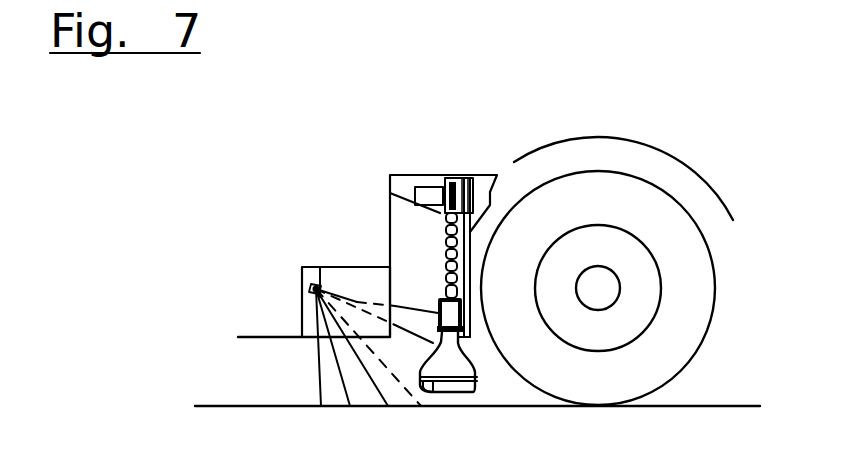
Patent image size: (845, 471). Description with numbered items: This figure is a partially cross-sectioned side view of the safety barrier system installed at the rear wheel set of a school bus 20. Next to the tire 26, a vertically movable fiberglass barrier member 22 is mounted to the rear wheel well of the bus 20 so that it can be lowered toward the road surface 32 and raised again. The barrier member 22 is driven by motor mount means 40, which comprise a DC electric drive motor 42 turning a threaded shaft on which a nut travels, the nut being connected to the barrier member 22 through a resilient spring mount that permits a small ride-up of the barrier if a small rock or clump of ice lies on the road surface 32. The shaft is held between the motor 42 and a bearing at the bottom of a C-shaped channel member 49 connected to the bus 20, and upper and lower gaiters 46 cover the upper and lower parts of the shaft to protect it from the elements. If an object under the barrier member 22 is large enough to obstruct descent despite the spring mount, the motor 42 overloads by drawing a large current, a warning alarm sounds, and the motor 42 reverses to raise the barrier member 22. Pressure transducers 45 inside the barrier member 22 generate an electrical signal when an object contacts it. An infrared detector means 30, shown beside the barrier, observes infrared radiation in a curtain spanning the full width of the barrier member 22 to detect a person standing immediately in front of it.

The school bus 20 is at (386, 211).
The barrier member 22 is at (447, 392).
The tires 26 is at (645, 271).
The infrared detector means 30 is at (325, 313).
The road surface 32 is at (502, 370).
The motor mount means 40 is at (390, 193).
The DC electric drive motor 42 is at (402, 145).
The pressure transducers 45 is at (376, 261).
The gaiters 46 is at (520, 211).
The C-shaped channel member 49 is at (467, 191).